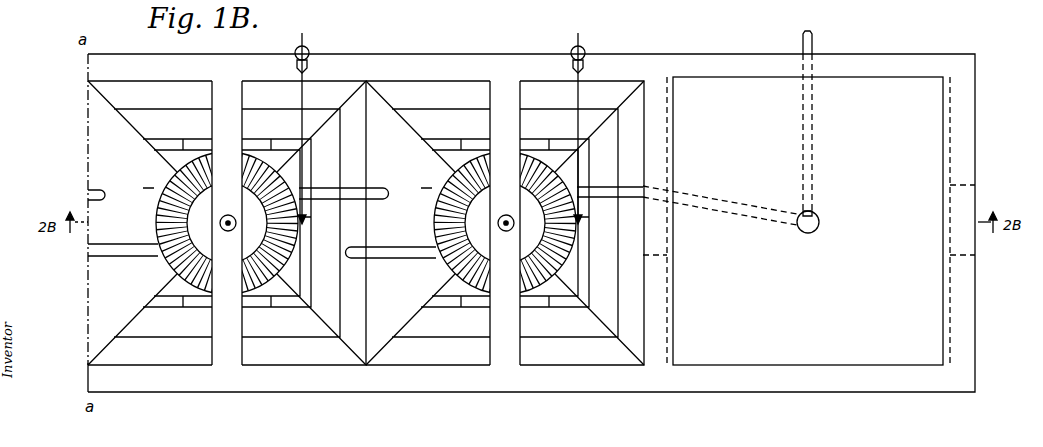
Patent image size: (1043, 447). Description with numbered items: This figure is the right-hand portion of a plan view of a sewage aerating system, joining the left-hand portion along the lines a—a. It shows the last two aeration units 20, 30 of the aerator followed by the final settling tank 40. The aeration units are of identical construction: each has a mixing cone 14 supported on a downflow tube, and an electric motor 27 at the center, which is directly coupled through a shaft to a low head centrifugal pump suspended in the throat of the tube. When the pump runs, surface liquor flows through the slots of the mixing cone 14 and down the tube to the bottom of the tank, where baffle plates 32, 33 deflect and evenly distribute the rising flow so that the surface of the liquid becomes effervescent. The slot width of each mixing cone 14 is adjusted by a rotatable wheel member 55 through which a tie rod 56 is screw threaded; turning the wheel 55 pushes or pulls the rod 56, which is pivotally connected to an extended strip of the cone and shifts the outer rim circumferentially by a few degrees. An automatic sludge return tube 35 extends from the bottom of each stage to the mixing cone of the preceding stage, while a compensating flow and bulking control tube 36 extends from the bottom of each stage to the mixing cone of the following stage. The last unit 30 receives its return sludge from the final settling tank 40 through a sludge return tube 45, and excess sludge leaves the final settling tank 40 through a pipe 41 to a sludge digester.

The aeration unit 20 is at (132, 56).
The aeration unit 30 is at (437, 63).
The baffle plate 33 is at (203, 131).
The baffle plate 32 is at (203, 153).
The mixing cone 14 is at (203, 180).
The electric motor 27 is at (228, 215).
The rotatable wheel member 55 is at (310, 50).
The tie rod 56 is at (306, 71).
The automatic sludge return tube 35 is at (348, 188).
The compensating flow and bulking control tube 36 is at (88, 256).
The sludge return tube 45 is at (595, 192).
The final settling tank 40 is at (867, 78).
The pipe 41 is at (812, 45).